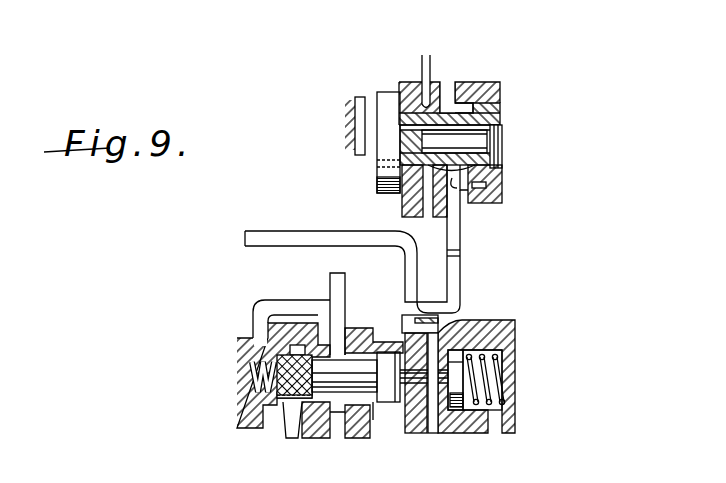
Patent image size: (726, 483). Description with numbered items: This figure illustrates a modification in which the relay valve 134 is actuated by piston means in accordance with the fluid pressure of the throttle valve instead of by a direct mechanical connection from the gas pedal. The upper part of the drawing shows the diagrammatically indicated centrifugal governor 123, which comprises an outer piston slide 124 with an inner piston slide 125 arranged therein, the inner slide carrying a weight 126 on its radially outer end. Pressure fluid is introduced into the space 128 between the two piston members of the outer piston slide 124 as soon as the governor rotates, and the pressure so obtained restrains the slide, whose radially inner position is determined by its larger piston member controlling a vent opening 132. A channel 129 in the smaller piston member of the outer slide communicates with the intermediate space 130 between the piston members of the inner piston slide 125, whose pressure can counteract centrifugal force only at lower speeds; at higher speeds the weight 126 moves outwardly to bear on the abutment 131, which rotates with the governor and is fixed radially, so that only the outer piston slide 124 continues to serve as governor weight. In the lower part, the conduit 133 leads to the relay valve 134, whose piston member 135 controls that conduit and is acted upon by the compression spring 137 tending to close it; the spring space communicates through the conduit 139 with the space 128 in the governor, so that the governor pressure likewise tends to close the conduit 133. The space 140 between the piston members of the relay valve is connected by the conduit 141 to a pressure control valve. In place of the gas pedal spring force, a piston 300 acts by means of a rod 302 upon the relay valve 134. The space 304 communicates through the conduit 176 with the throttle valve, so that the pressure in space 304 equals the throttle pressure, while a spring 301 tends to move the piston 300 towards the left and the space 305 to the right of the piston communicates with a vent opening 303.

The centrifugal governor 123 is at (488, 142).
The outer piston slide 124 is at (500, 91).
The inner piston slide 125 is at (397, 178).
The weight 126 is at (378, 168).
The space 128 is at (474, 193).
The channel 129 is at (426, 100).
The intermediate space 130 is at (500, 117).
The abutment 131 is at (358, 128).
The vent opening 132 is at (476, 93).
The conduit 133 is at (286, 412).
The relay valve 134 is at (340, 420).
The piston member 135 is at (280, 398).
The compression spring 137 is at (258, 372).
The conduit 139 is at (373, 420).
The space 140 is at (355, 353).
The conduit 141 is at (330, 282).
The conduit 176 is at (246, 238).
The piston 300 is at (470, 344).
The spring 301 is at (498, 357).
The rod 302 is at (432, 420).
The vent opening 303 is at (496, 421).
The space 304 is at (436, 350).
The space 305 is at (490, 380).